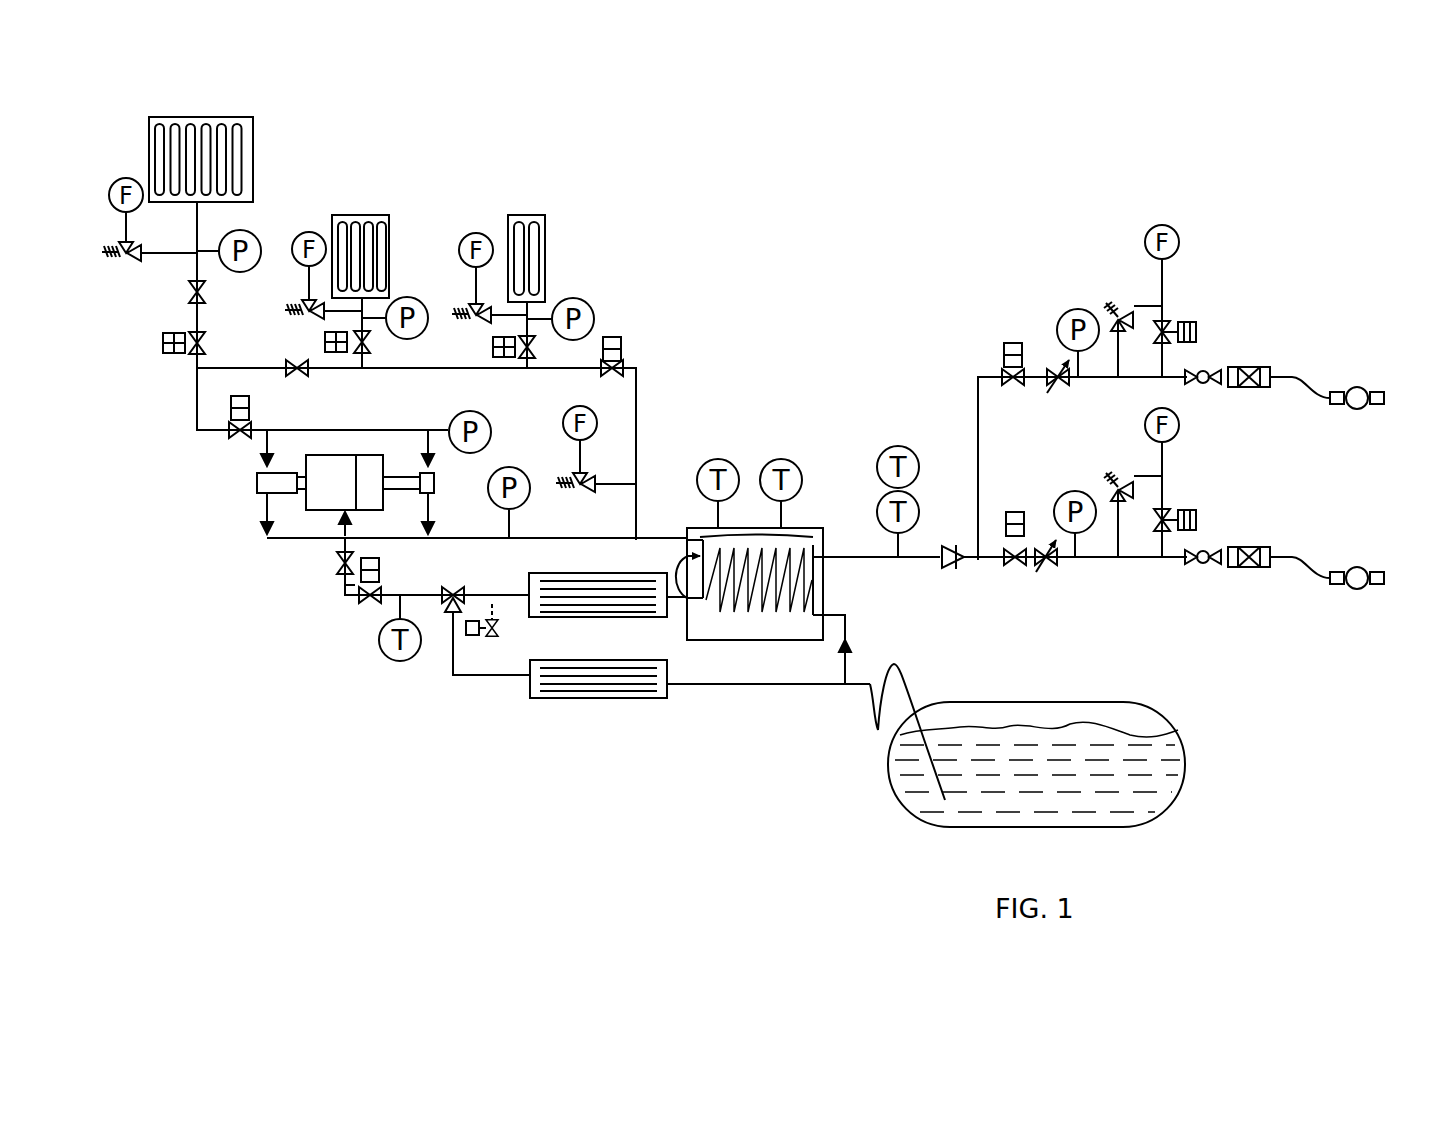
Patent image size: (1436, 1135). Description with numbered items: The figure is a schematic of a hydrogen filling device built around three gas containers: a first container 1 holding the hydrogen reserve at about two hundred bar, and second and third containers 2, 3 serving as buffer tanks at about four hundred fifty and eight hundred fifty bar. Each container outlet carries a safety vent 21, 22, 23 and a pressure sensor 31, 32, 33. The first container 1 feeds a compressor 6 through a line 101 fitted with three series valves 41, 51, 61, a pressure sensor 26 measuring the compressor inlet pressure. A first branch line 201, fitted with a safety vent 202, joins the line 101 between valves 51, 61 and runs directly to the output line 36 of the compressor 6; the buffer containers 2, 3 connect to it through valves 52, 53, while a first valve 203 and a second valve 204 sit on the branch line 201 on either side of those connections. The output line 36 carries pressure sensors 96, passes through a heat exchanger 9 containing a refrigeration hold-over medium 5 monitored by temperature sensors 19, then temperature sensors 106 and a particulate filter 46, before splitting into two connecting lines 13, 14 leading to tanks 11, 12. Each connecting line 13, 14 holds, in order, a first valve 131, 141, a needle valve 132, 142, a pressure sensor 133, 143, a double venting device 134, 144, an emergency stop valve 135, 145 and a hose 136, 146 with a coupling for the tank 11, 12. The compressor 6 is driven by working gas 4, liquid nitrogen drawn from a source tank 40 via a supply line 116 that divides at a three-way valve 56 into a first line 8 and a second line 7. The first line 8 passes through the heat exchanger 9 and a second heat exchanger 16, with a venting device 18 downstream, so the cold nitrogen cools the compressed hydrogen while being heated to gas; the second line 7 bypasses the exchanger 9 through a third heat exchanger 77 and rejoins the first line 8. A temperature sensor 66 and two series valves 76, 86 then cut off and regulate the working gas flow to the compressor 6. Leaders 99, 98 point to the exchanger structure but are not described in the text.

The first container 1 is at (268, 136).
The second container 2 is at (403, 255).
The third container 3 is at (550, 263).
The safety vent 21 is at (118, 176).
The safety vent 22 is at (300, 230).
The safety vent 23 is at (482, 230).
The pressure sensor 31 is at (252, 233).
The pressure sensor 32 is at (415, 300).
The pressure sensor 33 is at (590, 301).
The line 101 is at (195, 272).
The valve 41 is at (204, 293).
The valve 51 is at (207, 343).
The valve 52 is at (372, 346).
The valve 53 is at (545, 352).
The first branch line 201 is at (586, 366).
The safety vent 202 is at (595, 470).
The first valve 203 is at (297, 374).
The second valve 204 is at (628, 348).
The valve 61 is at (232, 442).
The compressor 6 is at (320, 497).
The pressure sensor 26 is at (463, 412).
The pressure sensors 96 is at (508, 466).
The output line 36 is at (318, 542).
The valve 86 is at (333, 573).
The supply line 116 is at (347, 594).
The valve 76 is at (372, 608).
The temperature sensor 66 is at (403, 662).
The three-way valve 56 is at (447, 623).
The venting device 18 is at (490, 648).
The second heat exchanger 16 is at (538, 700).
The third heat exchanger 77 is at (662, 700).
The upper heat exchanger 99 is at (682, 578).
The heat exchanger 9 is at (815, 526).
The coil 98 is at (810, 605).
The refrigeration hold-over medium 5 is at (700, 613).
The temperature sensors 19 is at (781, 458).
The temperature sensors 106 is at (878, 476).
The first line 8 is at (838, 598).
The second line 7 is at (825, 687).
The working gas 4 is at (1162, 780).
The working gas source 40 is at (1088, 702).
The particulate filter 46 is at (965, 562).
The connecting line 13 is at (976, 425).
The connecting line 14 is at (1140, 560).
The first valve 131 is at (1013, 343).
The needle valve 132 is at (1050, 368).
The pressure sensor 133 is at (1072, 310).
The double venting device 134 is at (1170, 300).
The emergency stop valve 135 is at (1205, 371).
The hose 136 is at (1303, 386).
The tank 11 is at (1354, 414).
The first valve 141 is at (1014, 510).
The needle valve 142 is at (1050, 566).
The pressure sensor 143 is at (1082, 492).
The double venting device 144 is at (1172, 488).
The emergency stop valve 145 is at (1204, 552).
The hose 146 is at (1299, 566).
The tank 12 is at (1354, 594).